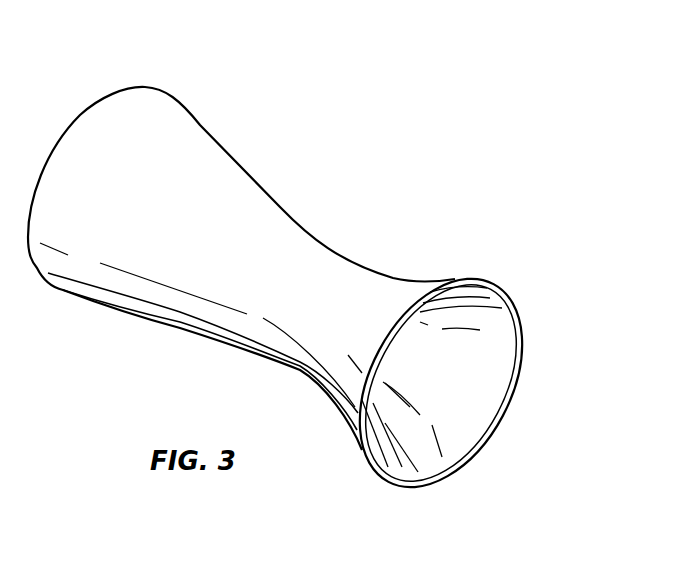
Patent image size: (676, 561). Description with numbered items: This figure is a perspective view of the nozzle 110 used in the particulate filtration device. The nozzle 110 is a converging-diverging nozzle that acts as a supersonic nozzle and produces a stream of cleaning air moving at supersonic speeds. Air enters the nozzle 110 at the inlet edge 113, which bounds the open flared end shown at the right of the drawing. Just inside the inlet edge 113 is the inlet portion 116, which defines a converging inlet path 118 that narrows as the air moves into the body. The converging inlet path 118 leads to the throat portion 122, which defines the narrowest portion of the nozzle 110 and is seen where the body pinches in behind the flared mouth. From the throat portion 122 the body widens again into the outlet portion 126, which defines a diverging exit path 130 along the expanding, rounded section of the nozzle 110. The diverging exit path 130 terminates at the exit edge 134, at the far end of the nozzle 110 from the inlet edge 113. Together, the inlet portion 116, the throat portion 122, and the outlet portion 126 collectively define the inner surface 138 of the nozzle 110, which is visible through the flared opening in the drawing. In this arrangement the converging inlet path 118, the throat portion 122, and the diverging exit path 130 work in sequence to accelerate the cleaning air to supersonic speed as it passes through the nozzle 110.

The nozzle 110 is at (488, 130).
The inlet edge 113 is at (517, 375).
The inlet portion 116 is at (330, 472).
The converging inlet path 118 is at (343, 418).
The throat portion 122 is at (408, 257).
The outlet portion 126 is at (305, 135).
The diverging exit path 130 is at (237, 157).
The exit edge 134 is at (80, 115).
The inner surface 138 is at (458, 427).